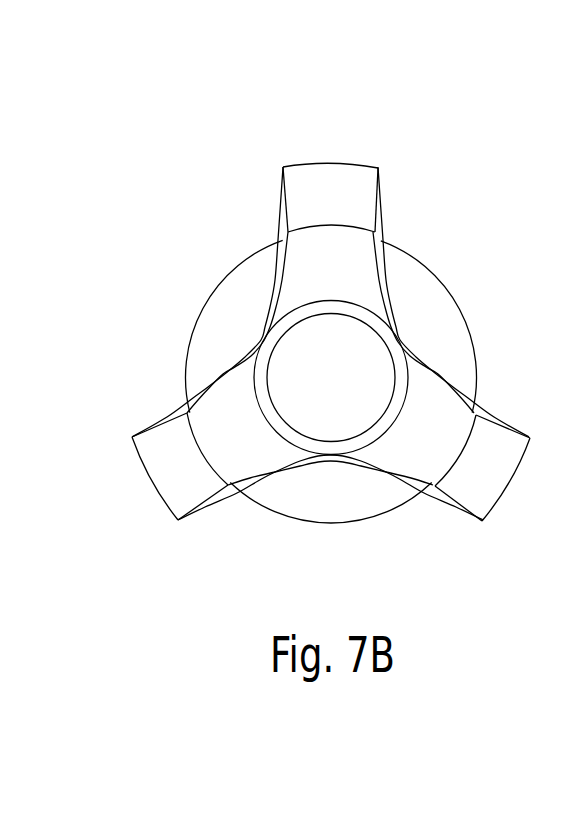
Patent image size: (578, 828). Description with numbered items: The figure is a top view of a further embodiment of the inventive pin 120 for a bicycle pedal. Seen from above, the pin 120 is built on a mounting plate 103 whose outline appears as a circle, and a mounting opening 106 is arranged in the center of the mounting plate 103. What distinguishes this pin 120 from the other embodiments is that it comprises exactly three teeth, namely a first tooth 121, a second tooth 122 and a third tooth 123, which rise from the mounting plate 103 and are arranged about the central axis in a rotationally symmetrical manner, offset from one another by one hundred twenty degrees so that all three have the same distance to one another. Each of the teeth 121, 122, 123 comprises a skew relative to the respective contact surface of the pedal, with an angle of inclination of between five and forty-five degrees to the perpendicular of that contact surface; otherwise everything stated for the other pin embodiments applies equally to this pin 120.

The pin 120 is at (157, 186).
The first tooth 121 is at (333, 190).
The second tooth 122 is at (177, 467).
The third tooth 123 is at (484, 467).
The mounting plate 103 is at (432, 317).
The mounting opening 106 is at (357, 393).